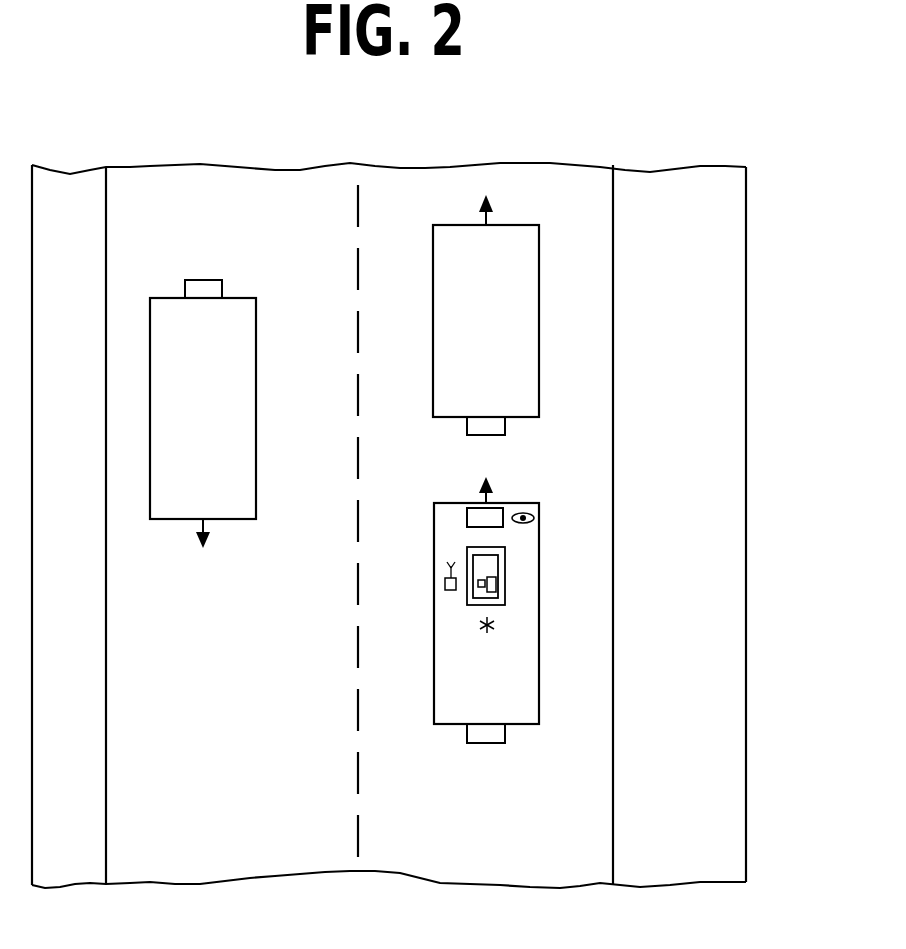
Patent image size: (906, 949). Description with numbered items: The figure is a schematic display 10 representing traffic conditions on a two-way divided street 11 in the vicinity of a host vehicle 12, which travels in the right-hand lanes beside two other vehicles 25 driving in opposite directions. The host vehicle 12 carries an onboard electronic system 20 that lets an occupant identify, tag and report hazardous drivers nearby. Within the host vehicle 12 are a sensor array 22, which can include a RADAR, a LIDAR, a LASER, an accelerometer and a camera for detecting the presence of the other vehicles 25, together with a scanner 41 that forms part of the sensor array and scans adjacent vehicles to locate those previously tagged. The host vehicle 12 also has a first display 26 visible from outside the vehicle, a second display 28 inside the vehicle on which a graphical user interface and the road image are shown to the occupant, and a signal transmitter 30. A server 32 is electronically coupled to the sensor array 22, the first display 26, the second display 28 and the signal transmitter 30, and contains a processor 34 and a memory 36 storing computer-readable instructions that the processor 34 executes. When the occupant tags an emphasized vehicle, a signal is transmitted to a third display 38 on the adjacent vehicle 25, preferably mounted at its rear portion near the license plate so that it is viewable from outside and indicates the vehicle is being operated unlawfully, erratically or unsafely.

The display 10 is at (722, 208).
The two-way divided street 11 is at (587, 402).
The host vehicle 12 is at (528, 612).
The onboard electronic system 20 is at (505, 570).
The sensor array 22 is at (518, 634).
The other vehicles 25 is at (256, 326).
The first display 26 is at (205, 280).
The second display 28 is at (507, 520).
The signal transmitter 30 is at (443, 584).
The server 32 is at (485, 565).
The processor 34 is at (481, 590).
The memory 36 is at (497, 583).
The third display 38 is at (484, 435).
The scanner 41 is at (527, 515).